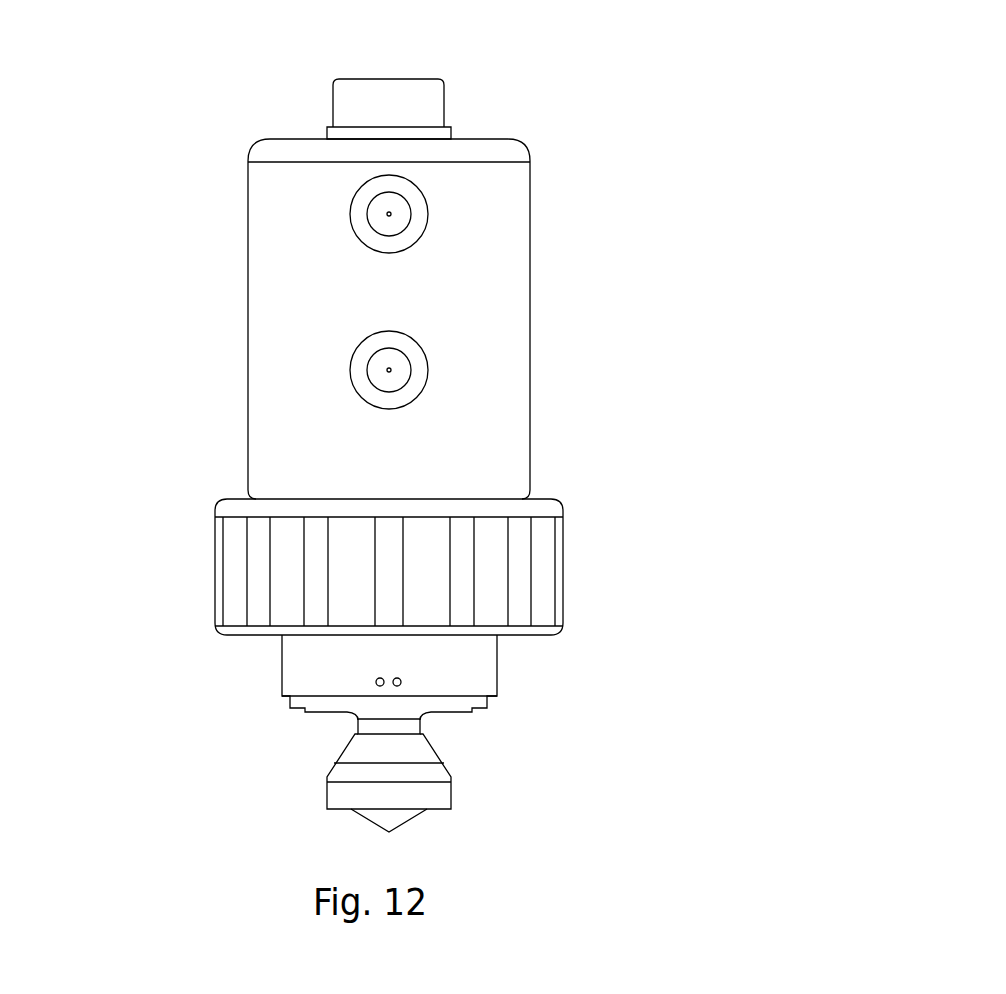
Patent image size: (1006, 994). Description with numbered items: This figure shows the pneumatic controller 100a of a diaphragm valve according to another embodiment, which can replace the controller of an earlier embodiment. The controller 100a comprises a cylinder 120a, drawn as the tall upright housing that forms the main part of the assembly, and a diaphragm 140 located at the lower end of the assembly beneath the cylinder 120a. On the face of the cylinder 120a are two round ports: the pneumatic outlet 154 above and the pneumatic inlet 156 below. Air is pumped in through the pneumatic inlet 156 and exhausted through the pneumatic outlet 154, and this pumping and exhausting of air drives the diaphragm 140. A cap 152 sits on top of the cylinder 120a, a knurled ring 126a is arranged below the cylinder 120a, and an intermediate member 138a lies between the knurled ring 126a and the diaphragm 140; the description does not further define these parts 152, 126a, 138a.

The controller 100a is at (970, 150).
The cap 152 is at (434, 75).
The cylinder 120a is at (502, 313).
The pneumatic outlet 154 is at (264, 188).
The pneumatic inlet 156 is at (264, 344).
The knurled nut 126a is at (500, 539).
The adapter 138a is at (311, 677).
The diaphragm 140 is at (308, 775).